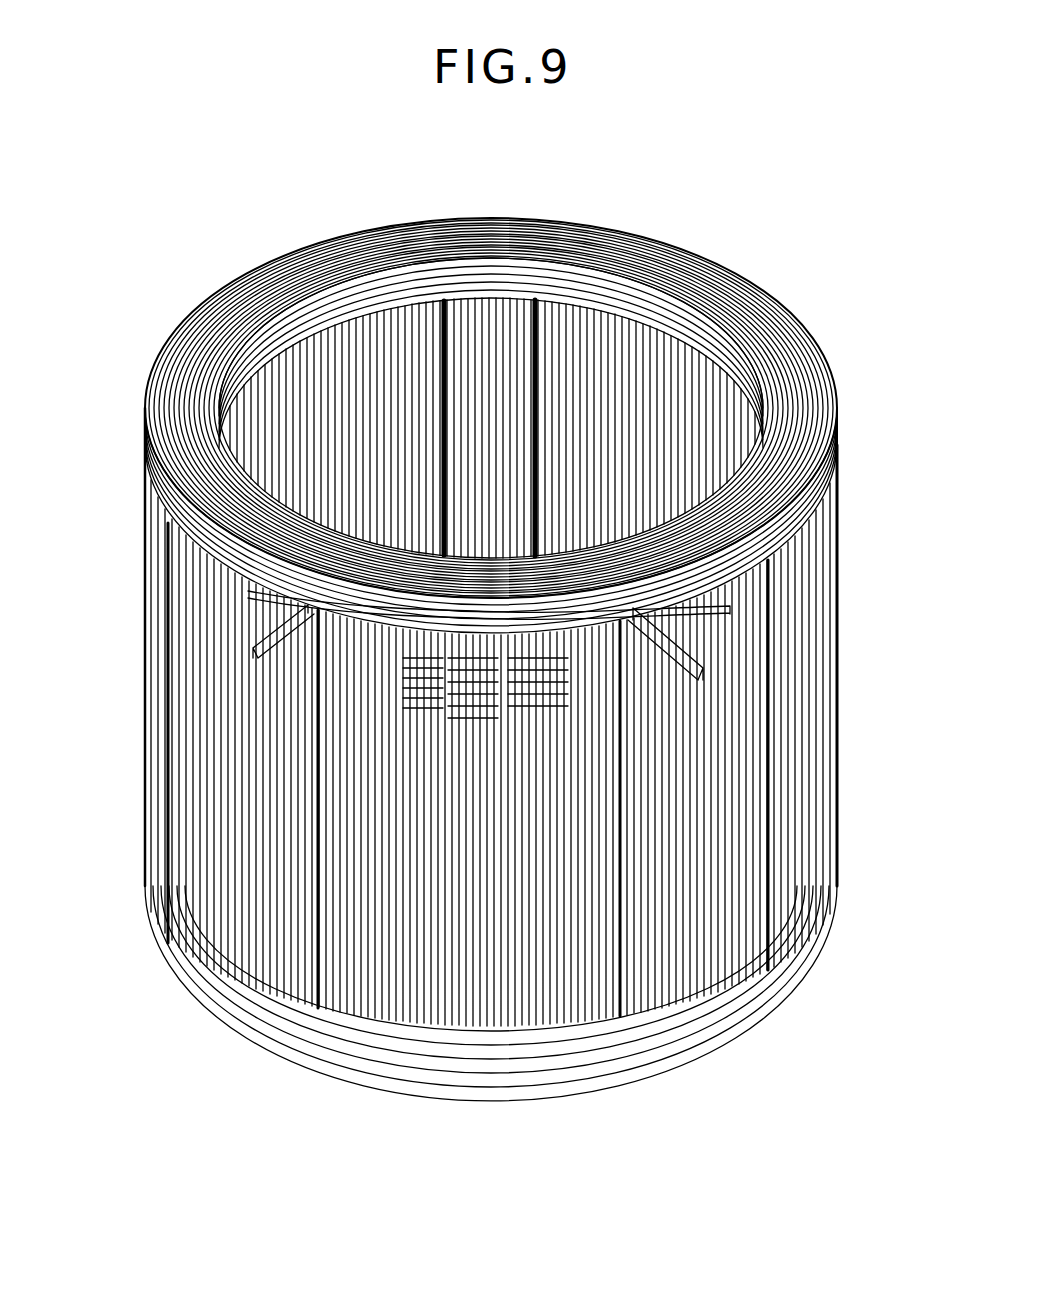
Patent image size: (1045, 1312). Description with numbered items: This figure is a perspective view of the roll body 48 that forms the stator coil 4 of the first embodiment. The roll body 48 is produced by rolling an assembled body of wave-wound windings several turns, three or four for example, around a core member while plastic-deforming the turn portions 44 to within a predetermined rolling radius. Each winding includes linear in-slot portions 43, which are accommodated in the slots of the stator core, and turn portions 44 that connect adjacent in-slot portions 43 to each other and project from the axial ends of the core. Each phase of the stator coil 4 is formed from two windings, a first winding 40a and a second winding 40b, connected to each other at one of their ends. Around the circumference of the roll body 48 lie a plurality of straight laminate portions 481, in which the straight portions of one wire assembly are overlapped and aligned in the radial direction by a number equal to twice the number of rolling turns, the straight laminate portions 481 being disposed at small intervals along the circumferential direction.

The stator coil 4 is at (668, 186).
The roll body 48 is at (746, 222).
The turn portions 44 is at (140, 402).
The in-slot portions 43 is at (146, 722).
The second winding 40b is at (720, 600).
The first winding 40a is at (688, 668).
The straight laminate portions 481 is at (485, 962).